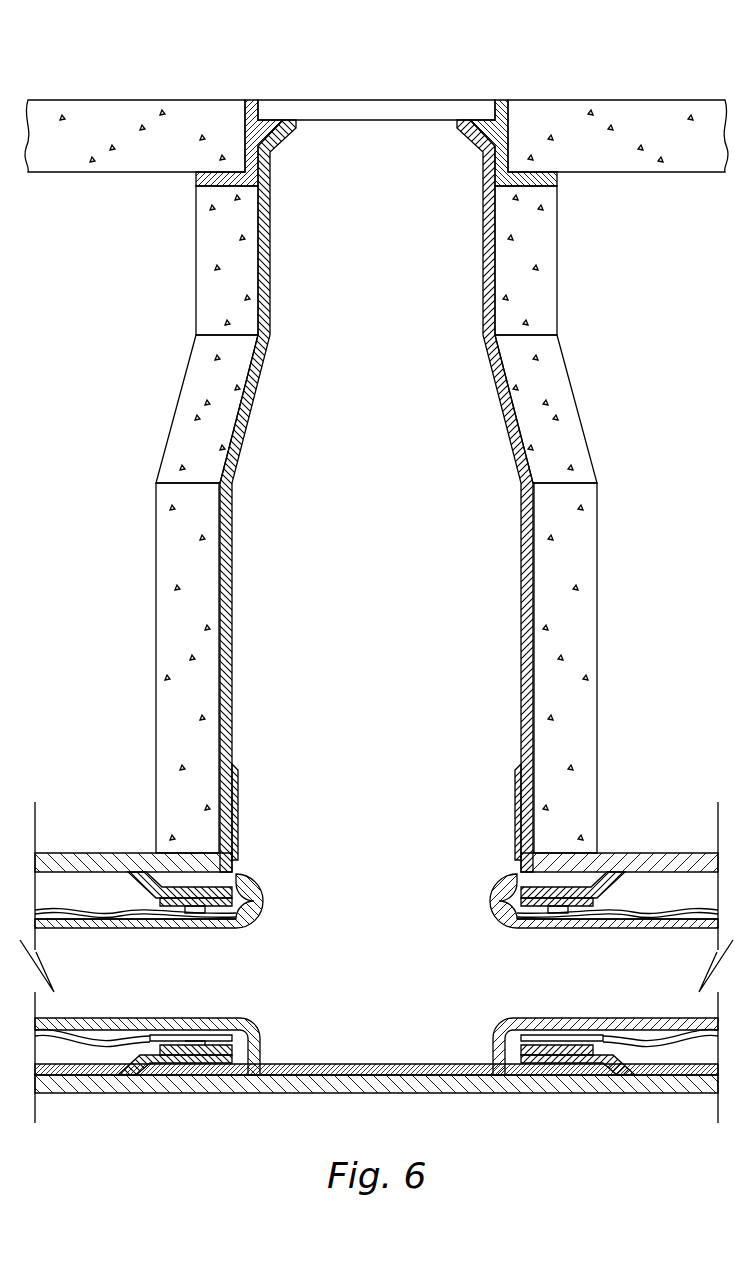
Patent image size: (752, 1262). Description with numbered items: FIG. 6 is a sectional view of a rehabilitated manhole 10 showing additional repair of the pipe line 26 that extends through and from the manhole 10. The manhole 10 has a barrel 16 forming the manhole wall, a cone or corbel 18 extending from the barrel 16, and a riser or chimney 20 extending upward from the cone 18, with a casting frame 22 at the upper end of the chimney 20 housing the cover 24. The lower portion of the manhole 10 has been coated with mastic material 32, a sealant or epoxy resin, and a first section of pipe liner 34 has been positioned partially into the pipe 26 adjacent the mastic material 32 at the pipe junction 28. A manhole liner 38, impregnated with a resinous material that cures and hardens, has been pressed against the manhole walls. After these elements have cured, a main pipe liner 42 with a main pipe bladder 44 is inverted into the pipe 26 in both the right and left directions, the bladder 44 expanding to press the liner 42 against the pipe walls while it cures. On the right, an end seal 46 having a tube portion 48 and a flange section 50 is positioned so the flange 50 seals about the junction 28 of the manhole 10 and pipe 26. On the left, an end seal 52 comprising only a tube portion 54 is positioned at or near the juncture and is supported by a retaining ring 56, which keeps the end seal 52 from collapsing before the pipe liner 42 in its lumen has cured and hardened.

The manhole 10 is at (618, 41).
The barrel 16 is at (590, 622).
The cone or corbel 18 is at (563, 392).
The riser or chimney 20 is at (545, 259).
The casting frame 22 is at (557, 180).
The cover 24 is at (362, 108).
The pipe line 26 is at (118, 852).
The pipe junction 28 is at (536, 853).
The mastic material 32 is at (226, 828).
The first section of pipe liner 34 is at (617, 880).
The manhole liner 38 is at (232, 637).
The main pipe liner 42 is at (118, 905).
The main pipe bladder 44 is at (172, 1020).
The end seal 46 is at (520, 868).
The tube portion 48 is at (600, 1045).
The flange section 50 is at (505, 1047).
The end seal 52 is at (140, 1048).
The tube portion 54 is at (236, 1047).
The retaining ring 56 is at (213, 1040).